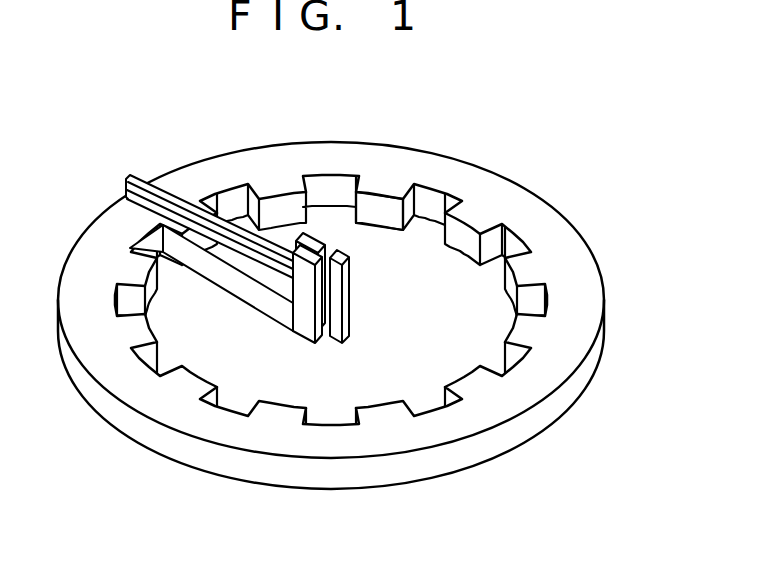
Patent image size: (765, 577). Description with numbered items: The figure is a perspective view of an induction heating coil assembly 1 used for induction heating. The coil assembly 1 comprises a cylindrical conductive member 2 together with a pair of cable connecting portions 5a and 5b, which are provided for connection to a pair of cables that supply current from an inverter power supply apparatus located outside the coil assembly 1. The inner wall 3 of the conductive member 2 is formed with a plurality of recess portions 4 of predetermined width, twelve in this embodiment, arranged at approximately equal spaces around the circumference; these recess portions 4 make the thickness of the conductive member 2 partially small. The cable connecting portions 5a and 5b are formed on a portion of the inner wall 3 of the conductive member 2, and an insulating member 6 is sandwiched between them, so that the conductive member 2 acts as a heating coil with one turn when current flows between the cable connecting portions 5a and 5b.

The induction heating coil assembly 1 is at (524, 138).
The cylindrical conductive member 2 is at (396, 165).
The inner wall 3 is at (387, 232).
The recess portion 4 is at (332, 186).
The cable connecting portion 5a is at (298, 312).
The cable connecting portion 5b is at (349, 301).
The insulating member 6 is at (136, 176).